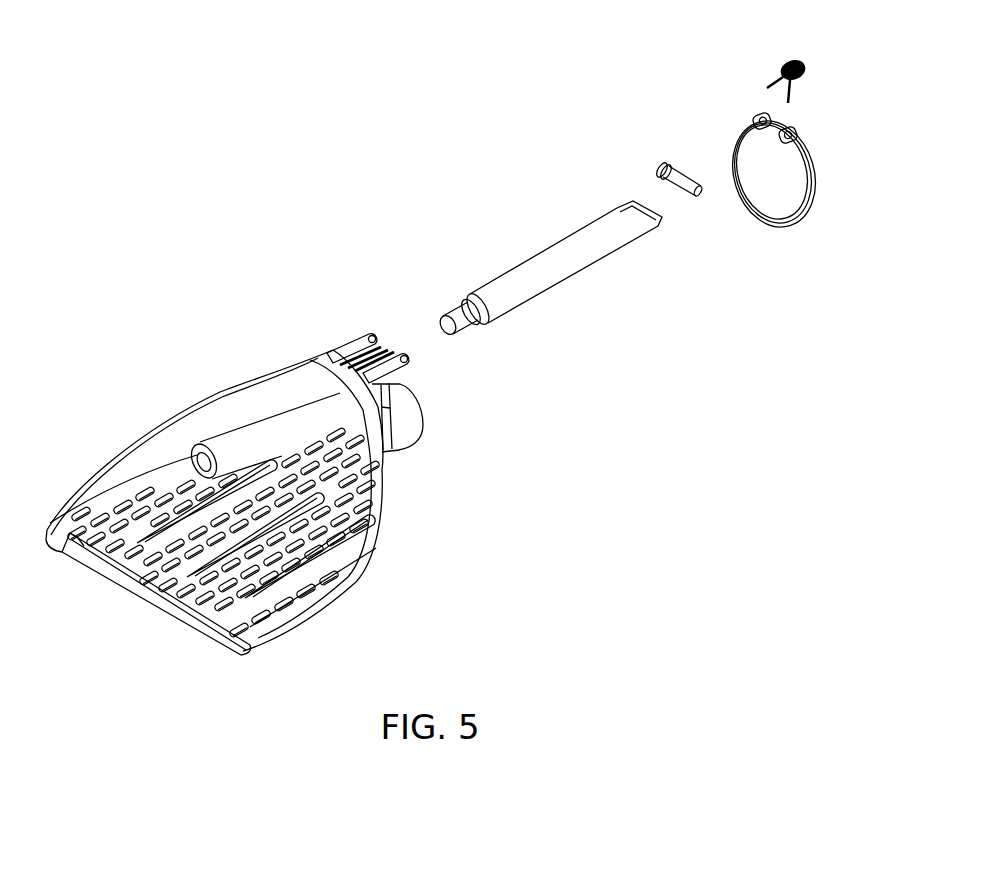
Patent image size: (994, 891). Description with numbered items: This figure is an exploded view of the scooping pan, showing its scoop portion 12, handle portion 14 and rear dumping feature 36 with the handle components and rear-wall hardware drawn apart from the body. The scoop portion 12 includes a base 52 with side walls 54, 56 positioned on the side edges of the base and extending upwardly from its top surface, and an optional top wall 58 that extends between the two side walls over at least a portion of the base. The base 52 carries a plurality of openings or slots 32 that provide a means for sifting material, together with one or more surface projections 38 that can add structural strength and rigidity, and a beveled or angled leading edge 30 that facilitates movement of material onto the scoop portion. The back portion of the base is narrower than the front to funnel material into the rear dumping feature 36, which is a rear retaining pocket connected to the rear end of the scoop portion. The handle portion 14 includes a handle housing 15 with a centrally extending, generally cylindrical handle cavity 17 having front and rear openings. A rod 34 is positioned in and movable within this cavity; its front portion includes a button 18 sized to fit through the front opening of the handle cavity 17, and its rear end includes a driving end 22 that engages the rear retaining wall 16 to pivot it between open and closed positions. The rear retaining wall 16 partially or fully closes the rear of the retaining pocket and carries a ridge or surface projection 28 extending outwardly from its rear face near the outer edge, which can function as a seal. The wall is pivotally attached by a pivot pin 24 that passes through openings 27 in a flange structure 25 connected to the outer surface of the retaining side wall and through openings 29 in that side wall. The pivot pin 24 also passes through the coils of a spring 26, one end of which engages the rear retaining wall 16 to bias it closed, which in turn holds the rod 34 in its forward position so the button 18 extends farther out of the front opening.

The scoop portion 12 is at (122, 452).
The handle portion 14 is at (280, 397).
The handle housing 15 is at (247, 424).
The rear retaining wall 16 is at (813, 205).
The handle cavity 17 is at (197, 455).
The button 18 is at (458, 308).
The driving end 22 is at (655, 230).
The pivot pin 24 is at (669, 162).
The flange structure 25 is at (412, 374).
The spring 26 is at (782, 64).
The openings 27 is at (410, 362).
The ridge or surface projection 28 is at (797, 226).
The openings 29 is at (796, 137).
The leading edge 30 is at (128, 594).
The openings or slots 32 is at (80, 553).
The rod 34 is at (578, 272).
The rear dumping feature 36 is at (412, 450).
The surface projections 38 is at (237, 628).
The base 52 is at (178, 592).
The side wall 54 is at (338, 583).
The side wall 56 is at (203, 412).
The top wall 58 is at (326, 370).